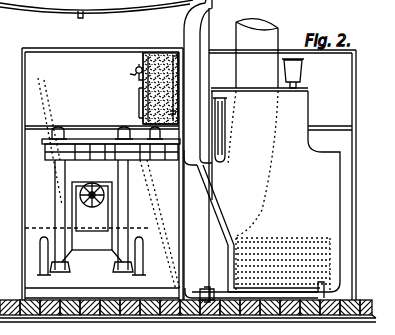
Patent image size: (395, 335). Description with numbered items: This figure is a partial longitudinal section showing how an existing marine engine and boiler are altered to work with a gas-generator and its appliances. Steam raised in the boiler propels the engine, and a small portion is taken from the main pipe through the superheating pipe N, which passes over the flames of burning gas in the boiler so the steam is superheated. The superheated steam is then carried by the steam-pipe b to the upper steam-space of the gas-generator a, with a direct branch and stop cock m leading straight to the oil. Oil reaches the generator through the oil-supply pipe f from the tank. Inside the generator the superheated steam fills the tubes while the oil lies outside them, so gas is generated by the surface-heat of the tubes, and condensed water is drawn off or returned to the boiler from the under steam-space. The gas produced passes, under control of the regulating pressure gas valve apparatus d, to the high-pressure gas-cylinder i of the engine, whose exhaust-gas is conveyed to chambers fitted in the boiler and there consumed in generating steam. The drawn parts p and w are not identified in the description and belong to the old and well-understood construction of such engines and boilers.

The gas-generator a is at (136, 70).
The steam-pipe to generator b is at (178, 60).
The regulating pressure gas valve apparatus d is at (178, 83).
The oil-supply pipe f is at (139, 113).
The high-pressure gas-cylinder i is at (152, 146).
The stop cock m is at (178, 117).
The pipe for superheating the steam n is at (190, 212).
The feed pipe p is at (254, 289).
The boiler water tubes w is at (274, 175).